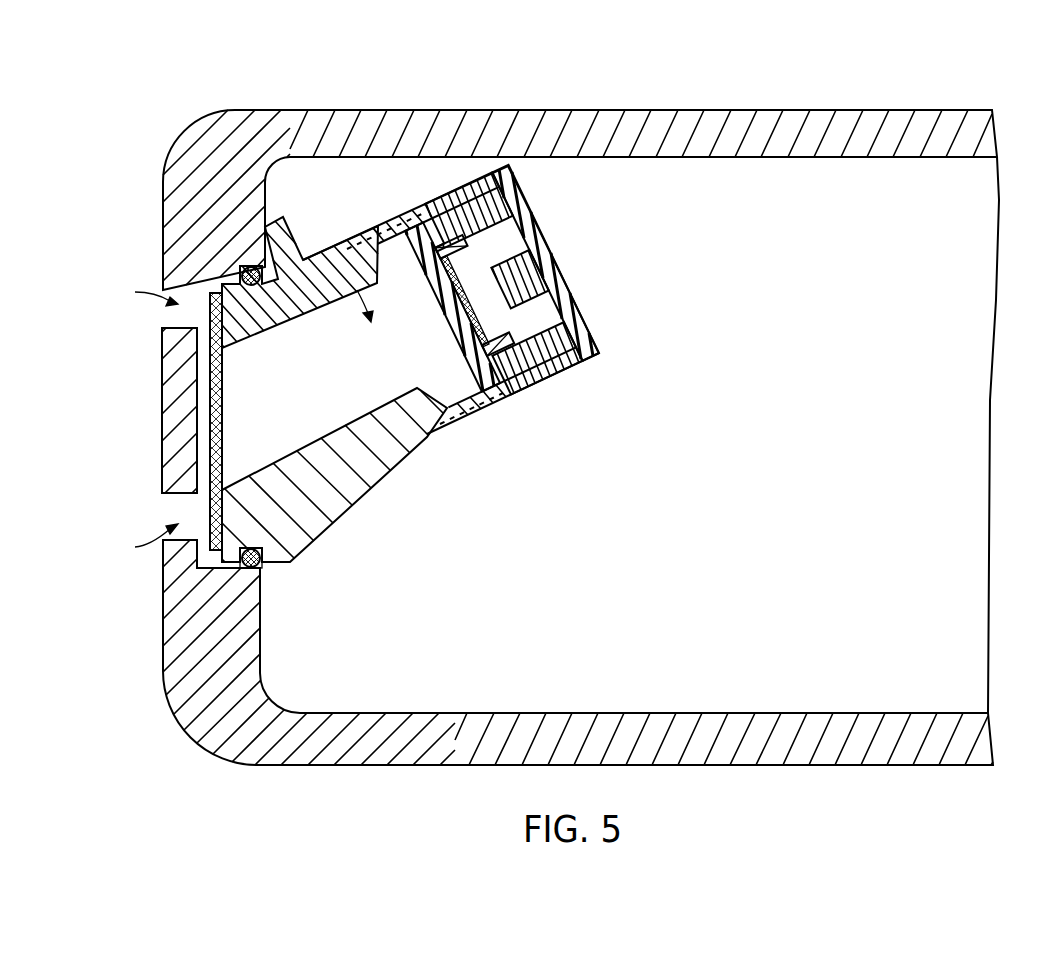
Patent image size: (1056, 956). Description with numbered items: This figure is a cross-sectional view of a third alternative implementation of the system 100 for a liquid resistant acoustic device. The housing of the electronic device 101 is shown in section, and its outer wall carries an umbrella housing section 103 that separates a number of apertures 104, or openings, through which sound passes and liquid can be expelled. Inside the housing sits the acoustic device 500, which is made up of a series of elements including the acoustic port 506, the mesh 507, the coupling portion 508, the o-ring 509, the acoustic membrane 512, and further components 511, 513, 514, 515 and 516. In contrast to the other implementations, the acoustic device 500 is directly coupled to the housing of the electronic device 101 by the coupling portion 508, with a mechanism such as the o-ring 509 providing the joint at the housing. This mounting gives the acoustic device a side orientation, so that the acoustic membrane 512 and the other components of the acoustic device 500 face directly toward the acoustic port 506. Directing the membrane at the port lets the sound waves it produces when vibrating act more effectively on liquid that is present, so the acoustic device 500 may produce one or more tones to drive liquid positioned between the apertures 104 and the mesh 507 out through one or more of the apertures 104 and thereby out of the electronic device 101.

The system 100 is at (581, 392).
The electronic device 101 is at (700, 722).
The umbrella housing section 103 is at (174, 421).
The apertures 104 is at (141, 419).
The acoustic device 500 is at (527, 312).
The acoustic port 506 is at (322, 258).
The mesh 507 is at (220, 380).
The coupling portion 508 is at (350, 243).
The o-ring 509 is at (259, 286).
The weld seam 511 is at (389, 221).
The acoustic membrane 512 is at (451, 247).
The lower clip 513 is at (498, 344).
The insert block 514 is at (519, 279).
The insulator block 515 is at (499, 284).
The back plate 516 is at (545, 263).